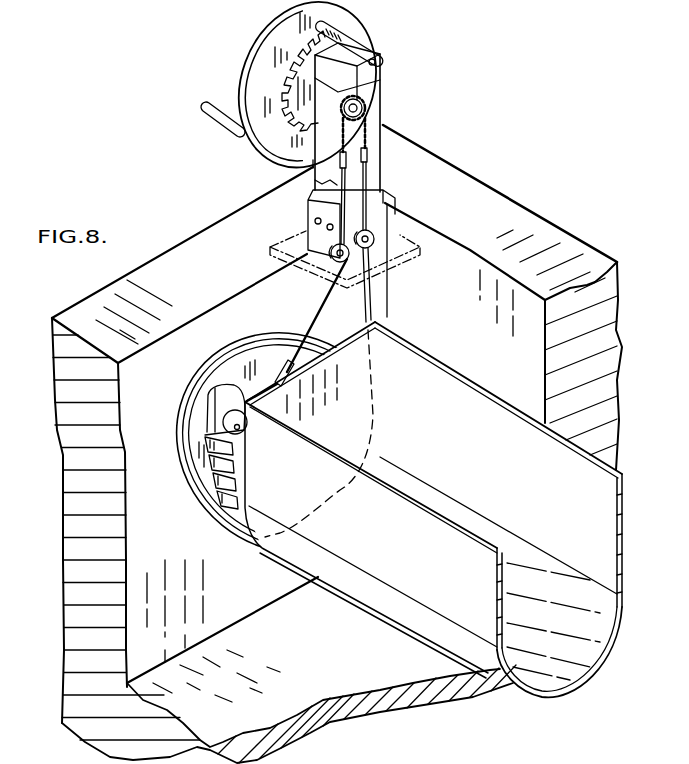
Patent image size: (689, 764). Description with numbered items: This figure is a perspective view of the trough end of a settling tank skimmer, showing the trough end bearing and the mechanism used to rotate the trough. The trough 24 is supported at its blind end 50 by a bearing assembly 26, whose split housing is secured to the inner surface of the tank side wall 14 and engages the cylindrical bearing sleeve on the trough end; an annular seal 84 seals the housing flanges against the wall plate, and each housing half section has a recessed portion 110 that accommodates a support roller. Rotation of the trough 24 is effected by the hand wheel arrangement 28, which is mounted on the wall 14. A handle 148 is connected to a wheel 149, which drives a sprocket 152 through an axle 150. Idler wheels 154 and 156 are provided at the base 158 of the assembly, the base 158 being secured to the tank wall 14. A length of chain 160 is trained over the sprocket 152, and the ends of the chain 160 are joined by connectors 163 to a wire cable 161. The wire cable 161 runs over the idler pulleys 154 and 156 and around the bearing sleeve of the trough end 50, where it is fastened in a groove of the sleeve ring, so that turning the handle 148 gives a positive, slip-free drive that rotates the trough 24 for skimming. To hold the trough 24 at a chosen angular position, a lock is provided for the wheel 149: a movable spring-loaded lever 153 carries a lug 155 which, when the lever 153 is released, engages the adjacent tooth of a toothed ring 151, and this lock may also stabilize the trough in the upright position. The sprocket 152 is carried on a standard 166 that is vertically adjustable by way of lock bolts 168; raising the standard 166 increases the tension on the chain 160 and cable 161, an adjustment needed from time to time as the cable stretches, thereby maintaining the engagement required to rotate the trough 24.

The side wall 14 is at (76, 488).
The trough 24 is at (438, 392).
The bearing assembly 26 is at (198, 456).
The hand wheel arrangement 28 is at (388, 117).
The blind end 50 is at (377, 314).
The annular seal 84 is at (183, 428).
The recessed portion 110 is at (213, 398).
The handle 148 is at (222, 106).
The wheel 149 is at (250, 149).
The axle 150 is at (386, 124).
The ring 151 is at (290, 66).
The sprocket 152 is at (365, 100).
The lever 153 is at (356, 30).
The idler wheel 154 is at (372, 242).
The lug 155 is at (327, 23).
The idler wheel 156 is at (270, 250).
The base 158 is at (385, 205).
The chain 160 is at (313, 167).
The wire cable 161 is at (383, 158).
The connector 163 is at (383, 147).
The standard 166 is at (384, 78).
The lock bolt 168 is at (316, 222).